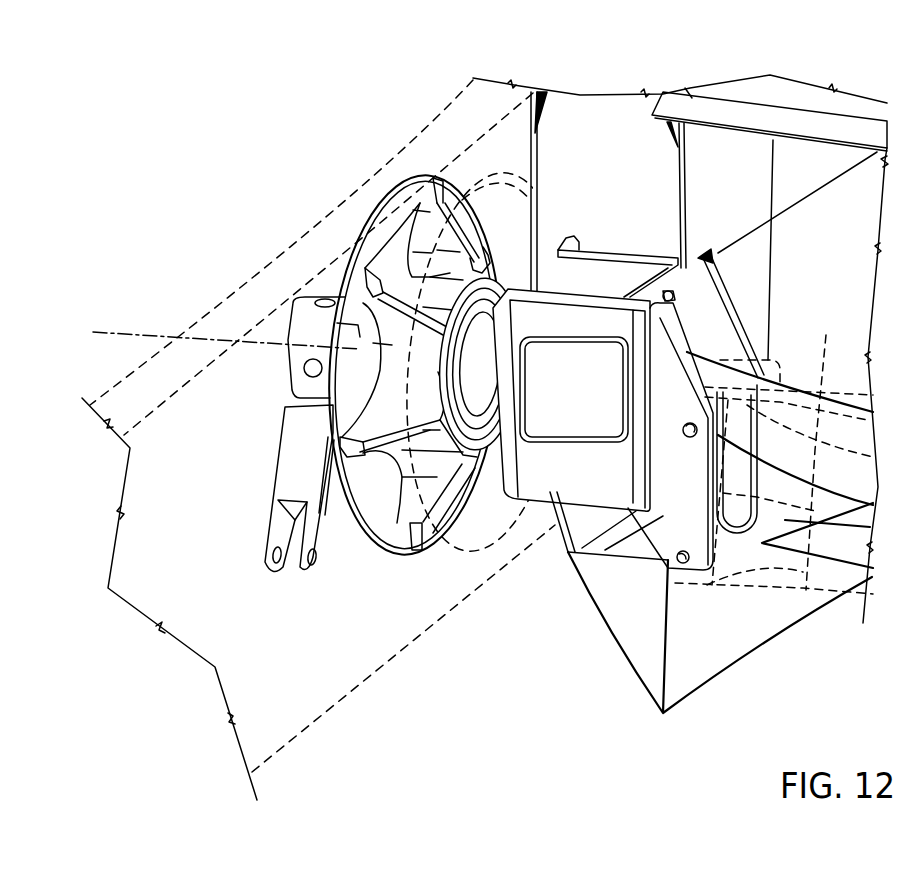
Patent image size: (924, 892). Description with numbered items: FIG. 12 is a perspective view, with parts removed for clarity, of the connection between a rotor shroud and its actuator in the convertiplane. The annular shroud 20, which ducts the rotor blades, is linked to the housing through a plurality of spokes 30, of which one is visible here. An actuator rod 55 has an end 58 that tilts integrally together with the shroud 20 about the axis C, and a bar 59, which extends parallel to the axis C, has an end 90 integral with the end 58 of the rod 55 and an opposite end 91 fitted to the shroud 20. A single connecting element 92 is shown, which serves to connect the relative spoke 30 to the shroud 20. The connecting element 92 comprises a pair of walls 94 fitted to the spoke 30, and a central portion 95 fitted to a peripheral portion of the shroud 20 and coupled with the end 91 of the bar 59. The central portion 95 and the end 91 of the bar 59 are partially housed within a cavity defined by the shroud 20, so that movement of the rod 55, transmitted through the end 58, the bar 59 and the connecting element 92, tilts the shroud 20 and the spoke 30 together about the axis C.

The annular shroud 20 is at (537, 160).
The spoke 30 is at (782, 457).
The rod 55 is at (293, 477).
The end of rod 58 is at (292, 351).
The bar 59 is at (510, 425).
The end of bar 90 is at (365, 333).
The end of bar 91 is at (484, 406).
The connecting element 92 is at (577, 318).
The walls 94 is at (715, 307).
The central portion 95 is at (676, 275).
The axis C is at (106, 334).